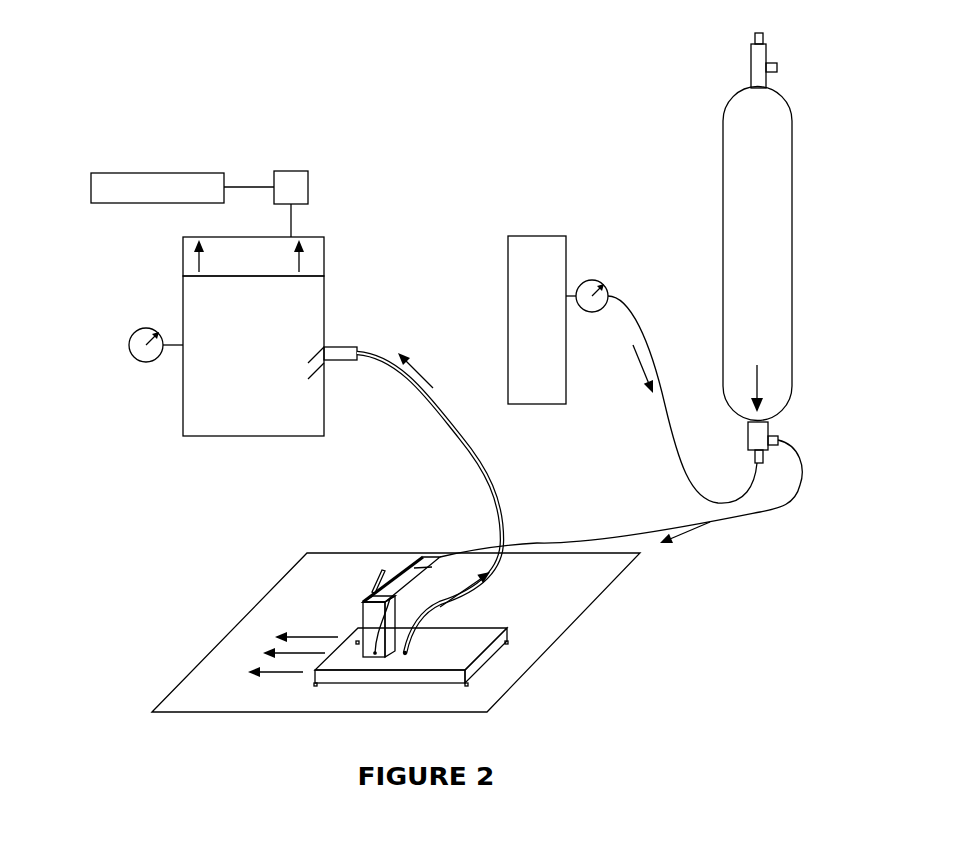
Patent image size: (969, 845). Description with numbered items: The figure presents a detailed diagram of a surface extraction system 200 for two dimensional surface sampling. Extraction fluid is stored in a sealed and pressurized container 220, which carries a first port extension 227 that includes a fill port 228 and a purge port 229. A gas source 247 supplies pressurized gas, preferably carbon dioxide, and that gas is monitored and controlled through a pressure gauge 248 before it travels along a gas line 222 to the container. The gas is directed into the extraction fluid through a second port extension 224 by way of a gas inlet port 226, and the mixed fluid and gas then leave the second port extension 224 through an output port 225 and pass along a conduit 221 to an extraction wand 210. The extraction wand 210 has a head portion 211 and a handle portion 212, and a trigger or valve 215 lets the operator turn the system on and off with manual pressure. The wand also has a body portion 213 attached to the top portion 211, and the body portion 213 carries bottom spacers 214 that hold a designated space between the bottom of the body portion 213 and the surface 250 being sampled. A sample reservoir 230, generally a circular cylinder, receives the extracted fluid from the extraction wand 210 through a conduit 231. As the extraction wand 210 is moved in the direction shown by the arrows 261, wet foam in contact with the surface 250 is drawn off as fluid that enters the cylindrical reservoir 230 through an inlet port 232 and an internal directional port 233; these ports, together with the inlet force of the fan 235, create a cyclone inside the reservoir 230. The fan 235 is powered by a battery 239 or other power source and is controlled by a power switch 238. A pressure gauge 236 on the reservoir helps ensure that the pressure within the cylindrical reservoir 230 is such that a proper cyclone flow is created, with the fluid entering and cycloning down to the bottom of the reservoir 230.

The surface extraction system 200 is at (148, 553).
The extraction wand 210 is at (426, 613).
The head portion 211 is at (362, 606).
The handle portion 212 is at (402, 553).
The body portion 213 is at (460, 665).
The bottom spacers 214 is at (467, 683).
The trigger or valve 215 is at (367, 590).
The sealed and pressurized container 220 is at (723, 197).
The conduit 221 is at (667, 532).
The gas supply line 222 is at (670, 423).
The second port extension 224 is at (748, 437).
The output port 225 is at (778, 439).
The gas inlet port 226 is at (755, 456).
The first port extension 227 is at (751, 64).
The fill port 228 is at (755, 33).
The purge port 229 is at (777, 72).
The sample reservoir 230 is at (183, 307).
The conduit 231 is at (423, 400).
The inlet port 232 is at (334, 346).
The internal directional port 233 is at (308, 359).
The fan 235 is at (183, 255).
The pressure gauge 236 is at (147, 361).
The power switch 238 is at (290, 171).
The battery 239 is at (160, 171).
The gas source 247 is at (508, 283).
The pressure gauge 248 is at (592, 280).
The surface 250 is at (288, 573).
The arrows 261 is at (293, 672).